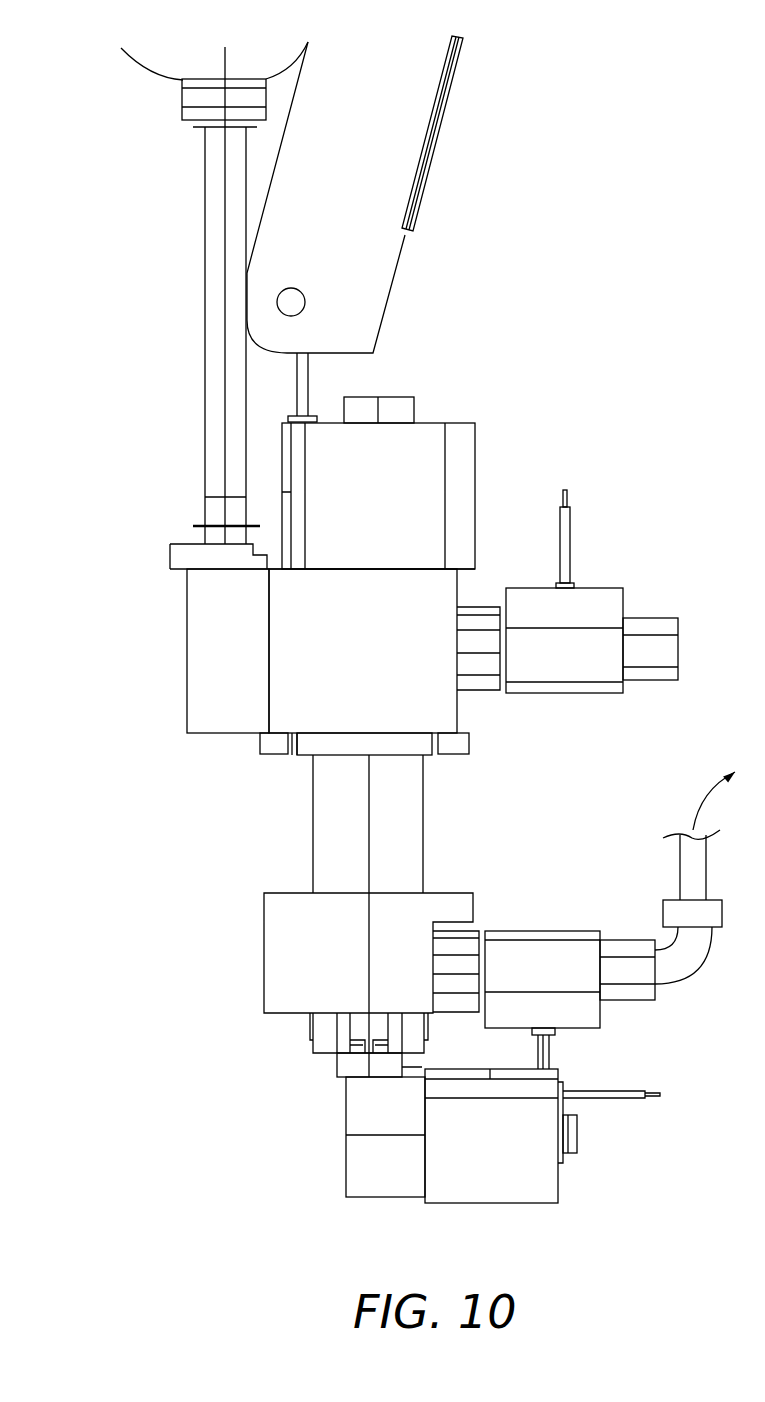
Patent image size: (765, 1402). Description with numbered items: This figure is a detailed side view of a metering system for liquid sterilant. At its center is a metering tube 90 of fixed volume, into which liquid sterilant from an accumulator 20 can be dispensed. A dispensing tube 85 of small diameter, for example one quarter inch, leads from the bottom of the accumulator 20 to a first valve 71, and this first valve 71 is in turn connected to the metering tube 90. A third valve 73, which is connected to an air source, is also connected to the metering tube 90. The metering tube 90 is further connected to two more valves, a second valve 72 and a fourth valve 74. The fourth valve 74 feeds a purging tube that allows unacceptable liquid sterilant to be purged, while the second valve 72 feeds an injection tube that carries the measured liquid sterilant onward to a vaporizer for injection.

The accumulator 20 is at (143, 68).
The dispensing tube 85 is at (195, 380).
The valve #1 71 is at (378, 483).
The valve #2 72 is at (565, 1022).
The valve #3 73 is at (643, 641).
The valve #4 74 is at (527, 1173).
The metering tube 90 is at (335, 830).